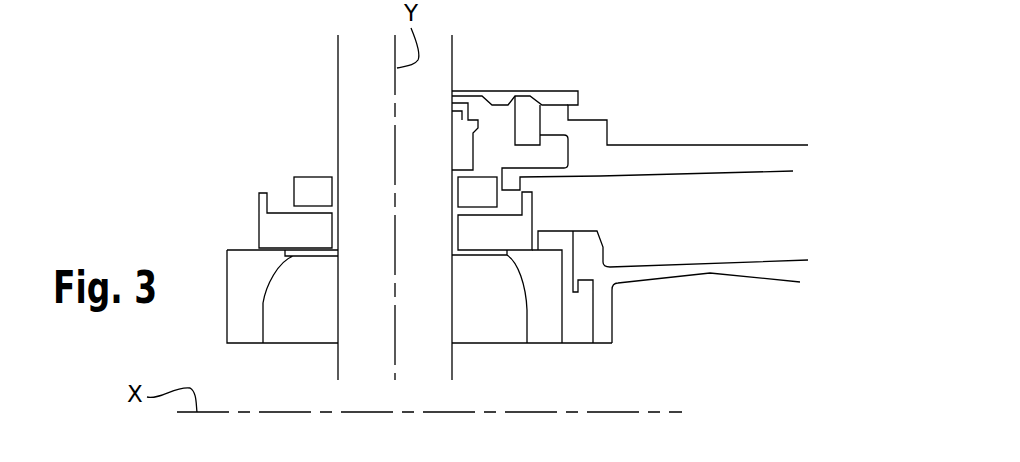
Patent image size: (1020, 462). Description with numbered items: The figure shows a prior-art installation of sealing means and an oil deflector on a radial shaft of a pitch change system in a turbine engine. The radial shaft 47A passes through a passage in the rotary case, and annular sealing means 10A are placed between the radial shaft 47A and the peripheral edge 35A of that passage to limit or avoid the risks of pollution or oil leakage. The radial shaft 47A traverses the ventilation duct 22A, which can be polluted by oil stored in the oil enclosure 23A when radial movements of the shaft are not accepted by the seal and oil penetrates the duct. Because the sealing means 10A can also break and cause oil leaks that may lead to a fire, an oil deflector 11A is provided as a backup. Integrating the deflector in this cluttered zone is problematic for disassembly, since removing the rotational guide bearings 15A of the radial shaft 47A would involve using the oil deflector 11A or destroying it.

The annular sealing means 10A is at (311, 184).
The oil deflector 11A is at (275, 230).
The radial shaft 47A is at (367, 285).
The peripheral edge of the passage of the rotary case 35A is at (508, 172).
The ventilation duct 22A is at (752, 205).
The oil enclosure 23A is at (708, 298).
The rotational guide bearings 15A is at (560, 311).